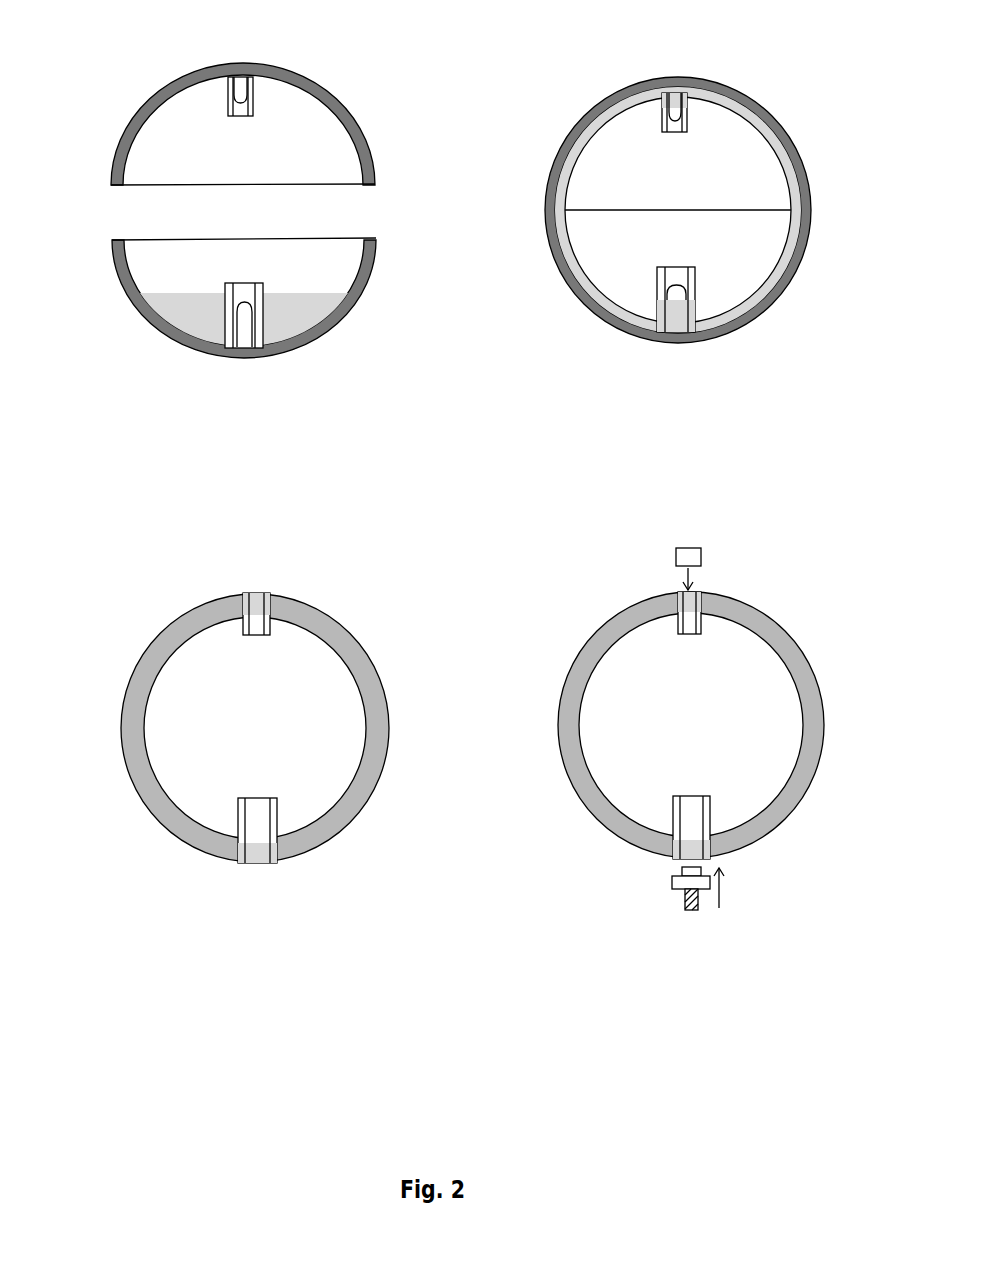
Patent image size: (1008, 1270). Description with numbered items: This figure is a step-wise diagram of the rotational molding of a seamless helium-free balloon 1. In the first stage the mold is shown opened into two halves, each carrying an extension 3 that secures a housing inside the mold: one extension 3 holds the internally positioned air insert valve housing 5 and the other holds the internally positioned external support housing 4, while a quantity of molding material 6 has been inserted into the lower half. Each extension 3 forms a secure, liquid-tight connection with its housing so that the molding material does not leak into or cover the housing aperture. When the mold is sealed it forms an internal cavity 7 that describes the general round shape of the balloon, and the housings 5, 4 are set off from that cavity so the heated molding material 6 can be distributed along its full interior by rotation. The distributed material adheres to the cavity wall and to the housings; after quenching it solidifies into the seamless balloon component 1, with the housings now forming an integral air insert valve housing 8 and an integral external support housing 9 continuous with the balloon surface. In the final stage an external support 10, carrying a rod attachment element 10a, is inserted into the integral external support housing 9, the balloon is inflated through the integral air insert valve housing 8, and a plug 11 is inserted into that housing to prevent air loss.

The seamless helium-free balloon 1 is at (783, 260).
The extension 3 is at (240, 83).
The internally positioned external support housing 4 is at (258, 308).
The internally positioned air insert valve housing 5 is at (227, 108).
The molding material 6 is at (313, 308).
The internal cavity 7 is at (745, 192).
The integral air insert valve housing 8 is at (255, 622).
The integral external support housing 9 is at (275, 825).
The external support 10 is at (680, 882).
The rod attachment element 10a is at (691, 909).
The plug 11 is at (702, 555).